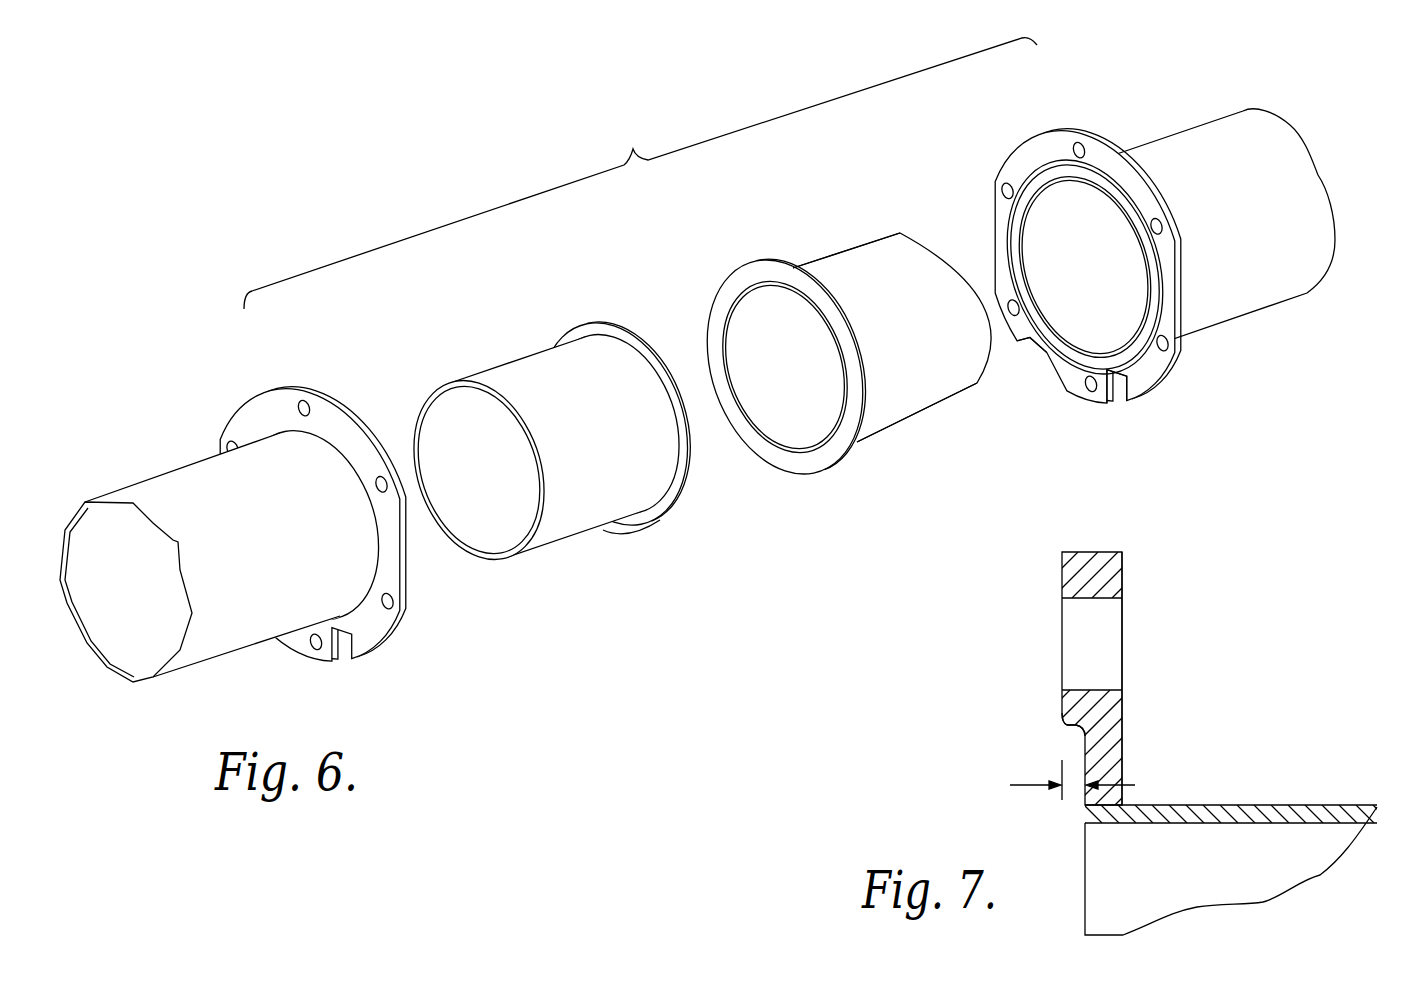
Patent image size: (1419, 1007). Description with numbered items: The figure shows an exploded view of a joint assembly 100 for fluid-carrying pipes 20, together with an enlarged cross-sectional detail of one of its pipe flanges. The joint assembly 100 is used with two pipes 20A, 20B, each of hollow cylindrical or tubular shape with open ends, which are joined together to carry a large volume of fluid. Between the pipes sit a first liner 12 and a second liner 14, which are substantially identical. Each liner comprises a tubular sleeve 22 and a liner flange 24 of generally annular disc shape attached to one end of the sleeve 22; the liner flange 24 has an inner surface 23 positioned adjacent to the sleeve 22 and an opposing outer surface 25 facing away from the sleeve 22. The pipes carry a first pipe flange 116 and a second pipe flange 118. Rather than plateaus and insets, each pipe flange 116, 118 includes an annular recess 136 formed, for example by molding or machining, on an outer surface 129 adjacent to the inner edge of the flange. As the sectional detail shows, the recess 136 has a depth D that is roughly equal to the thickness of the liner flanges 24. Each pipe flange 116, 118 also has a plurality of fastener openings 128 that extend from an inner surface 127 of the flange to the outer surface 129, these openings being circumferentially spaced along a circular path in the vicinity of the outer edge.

In FIG. 6, the joint assembly 100 is at (583, 142).
In FIG. 6, the first liner 12 is at (569, 418).
In FIG. 6, the second liner 14 is at (857, 346).
In FIG. 7, the pipe 20 is at (1280, 880).
In FIG. 6, the pipe 20A is at (160, 484).
In FIG. 6, the pipe 20B is at (1230, 125).
In FIG. 6, the sleeve 22 is at (480, 375).
In FIG. 6, the inner surface 23 is at (653, 517).
In FIG. 6, the liner flange 24 is at (755, 272).
In FIG. 6, the outer surface 25 is at (812, 463).
In FIG. 6, the first pipe flange 116 is at (338, 509).
In FIG. 7, the first pipe flange 116 is at (1143, 671).
In FIG. 6, the second pipe flange 118 is at (1110, 255).
In FIG. 7, the second pipe flange 118 is at (1143, 671).
In FIG. 6, the inner surface 127 is at (390, 598).
In FIG. 7, the inner surface 127 is at (1122, 718).
In FIG. 6, the fastener openings 128 is at (1083, 142).
In FIG. 7, the fastener openings 128 is at (1058, 640).
In FIG. 6, the outer surface 129 is at (1150, 370).
In FIG. 7, the outer surface 129 is at (1062, 573).
In FIG. 6, the annular recess 136 is at (1058, 360).
In FIG. 7, the annular recess 136 is at (1060, 737).
In FIG. 7, the depth D is at (1063, 780).